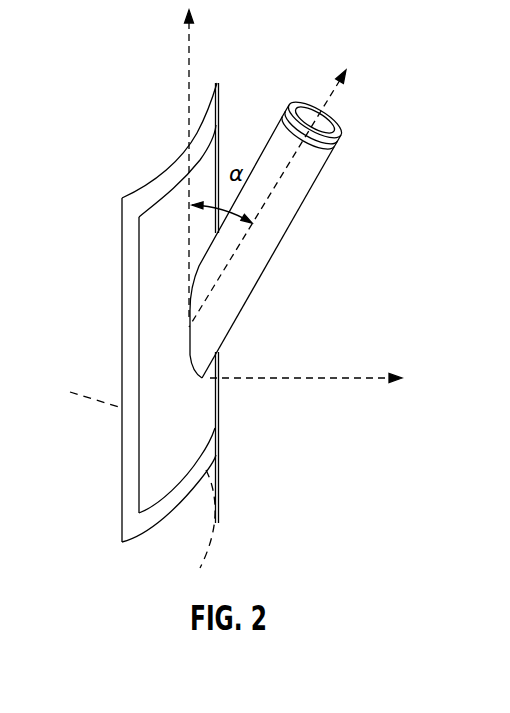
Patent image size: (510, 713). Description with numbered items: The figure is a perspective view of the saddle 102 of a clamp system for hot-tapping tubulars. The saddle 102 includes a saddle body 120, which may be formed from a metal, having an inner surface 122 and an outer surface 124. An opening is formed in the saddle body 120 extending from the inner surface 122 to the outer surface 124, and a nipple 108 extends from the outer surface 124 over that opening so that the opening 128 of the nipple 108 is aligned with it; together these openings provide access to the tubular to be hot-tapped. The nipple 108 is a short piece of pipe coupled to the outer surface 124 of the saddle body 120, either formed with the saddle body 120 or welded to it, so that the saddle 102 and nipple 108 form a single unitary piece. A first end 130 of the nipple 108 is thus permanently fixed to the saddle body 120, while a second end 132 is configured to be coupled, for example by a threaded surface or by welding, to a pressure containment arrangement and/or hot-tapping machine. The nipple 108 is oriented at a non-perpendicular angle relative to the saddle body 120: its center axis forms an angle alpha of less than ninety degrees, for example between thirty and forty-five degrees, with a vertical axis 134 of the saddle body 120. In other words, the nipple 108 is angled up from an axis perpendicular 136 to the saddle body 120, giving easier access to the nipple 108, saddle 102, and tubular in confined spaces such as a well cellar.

The saddle 102 is at (219, 178).
The nipple 108 is at (302, 178).
The saddle body 120 is at (153, 260).
The inner surface 122 is at (121, 313).
The outer surface 124 is at (201, 398).
The opening of the nipple 128 is at (329, 110).
The first end 130 is at (190, 340).
The second end 132 is at (346, 142).
The vertical axis 134 is at (189, 52).
The axis perpendicular 136 is at (330, 378).